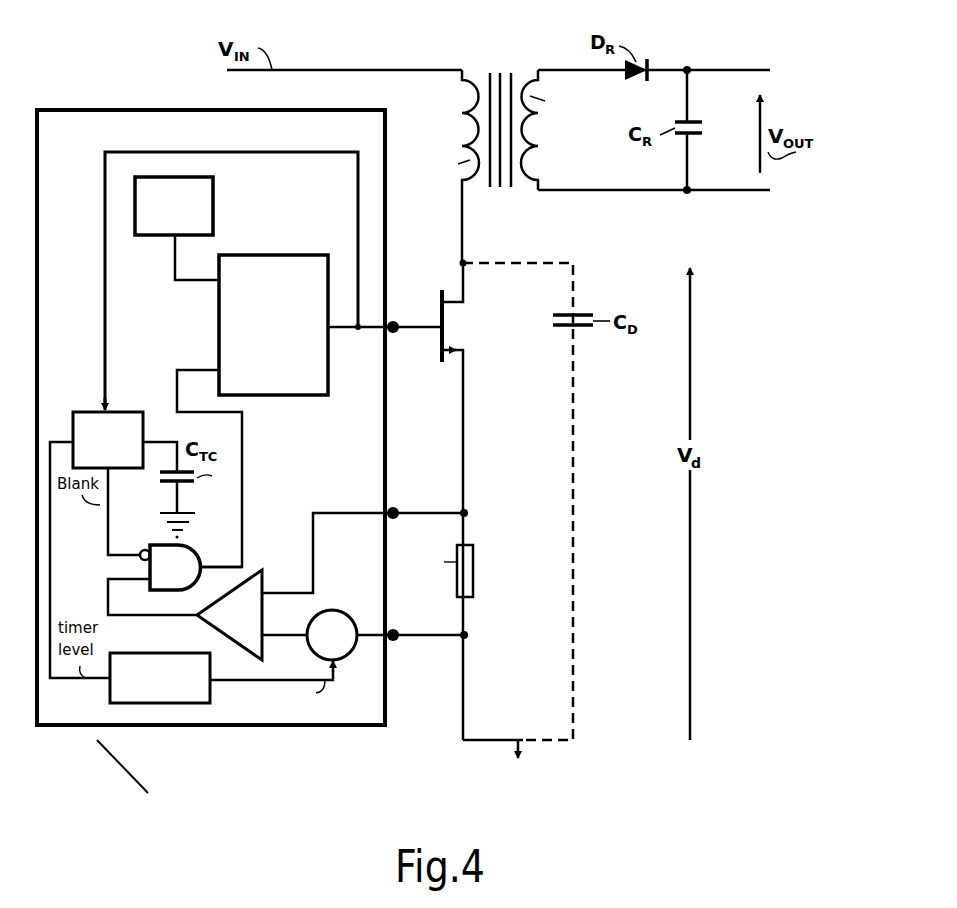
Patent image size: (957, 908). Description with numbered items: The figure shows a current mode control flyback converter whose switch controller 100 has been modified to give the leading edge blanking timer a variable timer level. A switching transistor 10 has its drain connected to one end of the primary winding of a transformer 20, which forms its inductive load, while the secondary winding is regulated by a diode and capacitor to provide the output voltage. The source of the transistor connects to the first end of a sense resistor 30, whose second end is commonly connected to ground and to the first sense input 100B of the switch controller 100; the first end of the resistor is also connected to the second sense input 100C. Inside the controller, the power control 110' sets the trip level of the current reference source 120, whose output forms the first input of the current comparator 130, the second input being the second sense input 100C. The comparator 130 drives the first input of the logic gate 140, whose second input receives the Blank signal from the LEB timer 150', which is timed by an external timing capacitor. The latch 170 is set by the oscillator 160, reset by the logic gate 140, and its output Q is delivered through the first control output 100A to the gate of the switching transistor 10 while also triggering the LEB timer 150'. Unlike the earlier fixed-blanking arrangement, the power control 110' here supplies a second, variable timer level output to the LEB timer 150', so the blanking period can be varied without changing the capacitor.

The switch controller 100 is at (250, 751).
The first control output 100A is at (396, 334).
The first sense input 100B is at (394, 506).
The second sense input 100C is at (394, 628).
The switching transistor S1 10 is at (510, 363).
The transformer 20 is at (500, 190).
The sense resistor RS 30 is at (473, 572).
The power control 110' is at (160, 713).
The current reference source ITRIP 120 is at (348, 610).
The current comparator 130 is at (222, 640).
The logic gate 140 is at (206, 546).
The LEB timer 150' is at (114, 407).
The oscillator 160 is at (213, 184).
The latch 170 is at (305, 253).